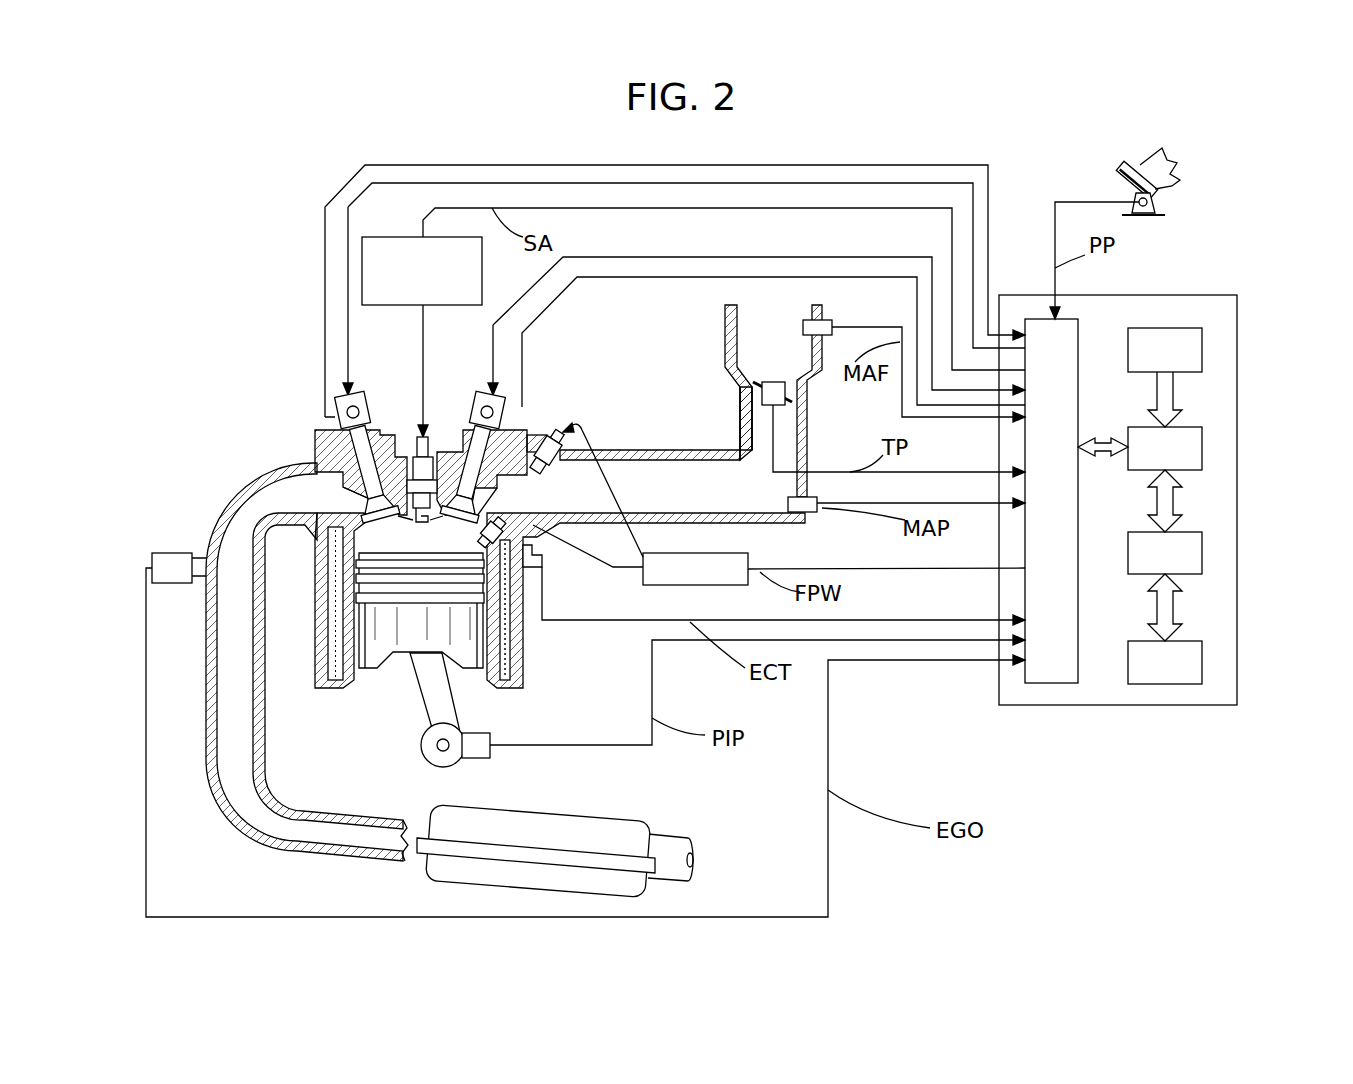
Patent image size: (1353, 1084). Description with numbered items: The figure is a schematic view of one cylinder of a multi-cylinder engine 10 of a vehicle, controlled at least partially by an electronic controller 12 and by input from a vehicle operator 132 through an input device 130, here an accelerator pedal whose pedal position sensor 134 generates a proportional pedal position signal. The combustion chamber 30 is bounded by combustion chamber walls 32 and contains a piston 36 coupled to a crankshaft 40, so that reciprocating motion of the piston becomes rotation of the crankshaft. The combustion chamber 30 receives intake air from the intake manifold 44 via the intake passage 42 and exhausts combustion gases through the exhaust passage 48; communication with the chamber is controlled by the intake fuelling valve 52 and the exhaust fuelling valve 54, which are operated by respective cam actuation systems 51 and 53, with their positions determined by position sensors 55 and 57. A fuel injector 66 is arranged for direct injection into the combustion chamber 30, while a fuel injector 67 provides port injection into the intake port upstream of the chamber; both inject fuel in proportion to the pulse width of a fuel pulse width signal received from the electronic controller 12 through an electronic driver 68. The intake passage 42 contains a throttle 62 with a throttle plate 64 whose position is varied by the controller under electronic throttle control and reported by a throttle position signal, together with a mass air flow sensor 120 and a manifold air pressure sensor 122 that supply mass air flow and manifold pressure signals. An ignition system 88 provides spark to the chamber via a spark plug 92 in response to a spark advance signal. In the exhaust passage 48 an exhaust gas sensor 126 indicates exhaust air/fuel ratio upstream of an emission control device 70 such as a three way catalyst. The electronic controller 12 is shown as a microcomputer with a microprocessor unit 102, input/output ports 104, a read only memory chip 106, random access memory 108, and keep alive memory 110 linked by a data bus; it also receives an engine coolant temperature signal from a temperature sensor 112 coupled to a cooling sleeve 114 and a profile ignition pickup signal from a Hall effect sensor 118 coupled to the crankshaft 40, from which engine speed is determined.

The engine 10 is at (247, 383).
The electronic controller 12 is at (1237, 296).
The combustion chamber 30 is at (420, 533).
The combustion chamber walls 32 is at (353, 690).
The piston 36 is at (403, 637).
The crankshaft 40 is at (428, 765).
The intake passage 42 is at (758, 357).
The intake manifold 44 is at (692, 502).
The exhaust passage 48 is at (270, 504).
The cam actuation system 51 is at (478, 402).
The intake fuelling valve 52 is at (476, 504).
The cam actuation system 53 is at (362, 400).
The exhaust fuelling valve 54 is at (368, 505).
The position sensor 55 is at (502, 413).
The position sensor 57 is at (337, 412).
The throttle 62 is at (786, 392).
The throttle plate 64 is at (752, 386).
The fuel injector 66 is at (515, 535).
The fuel injector 67 is at (554, 445).
The electronic driver 68 is at (658, 585).
The emission control device 70 is at (612, 812).
The ignition system 88 is at (378, 237).
The spark plug 92 is at (431, 432).
The CPU 102 is at (1202, 440).
The input/output ports 104 is at (1078, 330).
The read only memory chip 106 is at (1202, 348).
The random access memory 108 is at (1202, 550).
The keep alive memory 110 is at (1202, 660).
The temperature sensor 112 is at (537, 563).
The cooling sleeve 114 is at (505, 640).
The Hall effect sensor 118 is at (485, 760).
The mass air flow sensor 120 is at (832, 320).
The manifold air pressure sensor 122 is at (812, 512).
The exhaust gas sensor 126 is at (152, 556).
The input device 130 is at (1122, 178).
The vehicle operator 132 is at (1175, 163).
The pedal position sensor 134 is at (1165, 202).